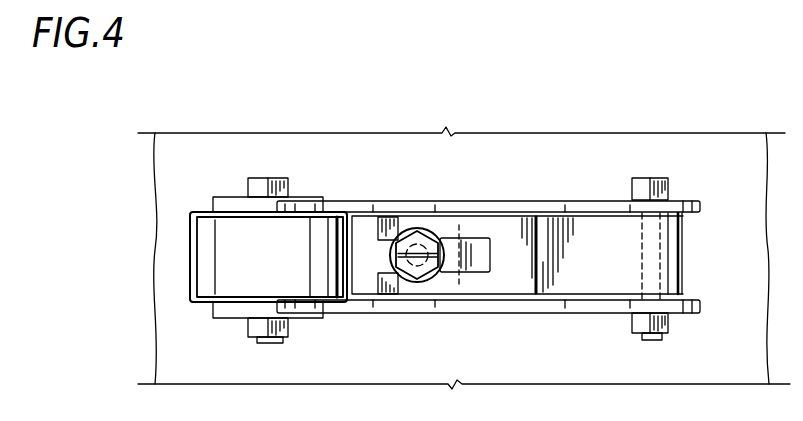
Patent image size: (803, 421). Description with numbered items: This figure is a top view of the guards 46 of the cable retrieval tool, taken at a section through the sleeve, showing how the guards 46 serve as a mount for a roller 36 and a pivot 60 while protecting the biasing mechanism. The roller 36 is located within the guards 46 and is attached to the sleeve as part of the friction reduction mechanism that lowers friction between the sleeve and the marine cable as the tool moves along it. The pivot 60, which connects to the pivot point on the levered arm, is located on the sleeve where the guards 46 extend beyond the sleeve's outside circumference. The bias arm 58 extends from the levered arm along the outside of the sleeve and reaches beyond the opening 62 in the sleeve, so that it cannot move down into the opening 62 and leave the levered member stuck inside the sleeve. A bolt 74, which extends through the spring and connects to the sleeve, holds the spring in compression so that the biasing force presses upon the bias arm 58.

The roller 36 is at (190, 270).
The guards 46 is at (467, 201).
The bias arm 58 is at (540, 268).
The pivot 60 is at (652, 203).
The opening 62 is at (477, 251).
The bolt 74 is at (407, 231).